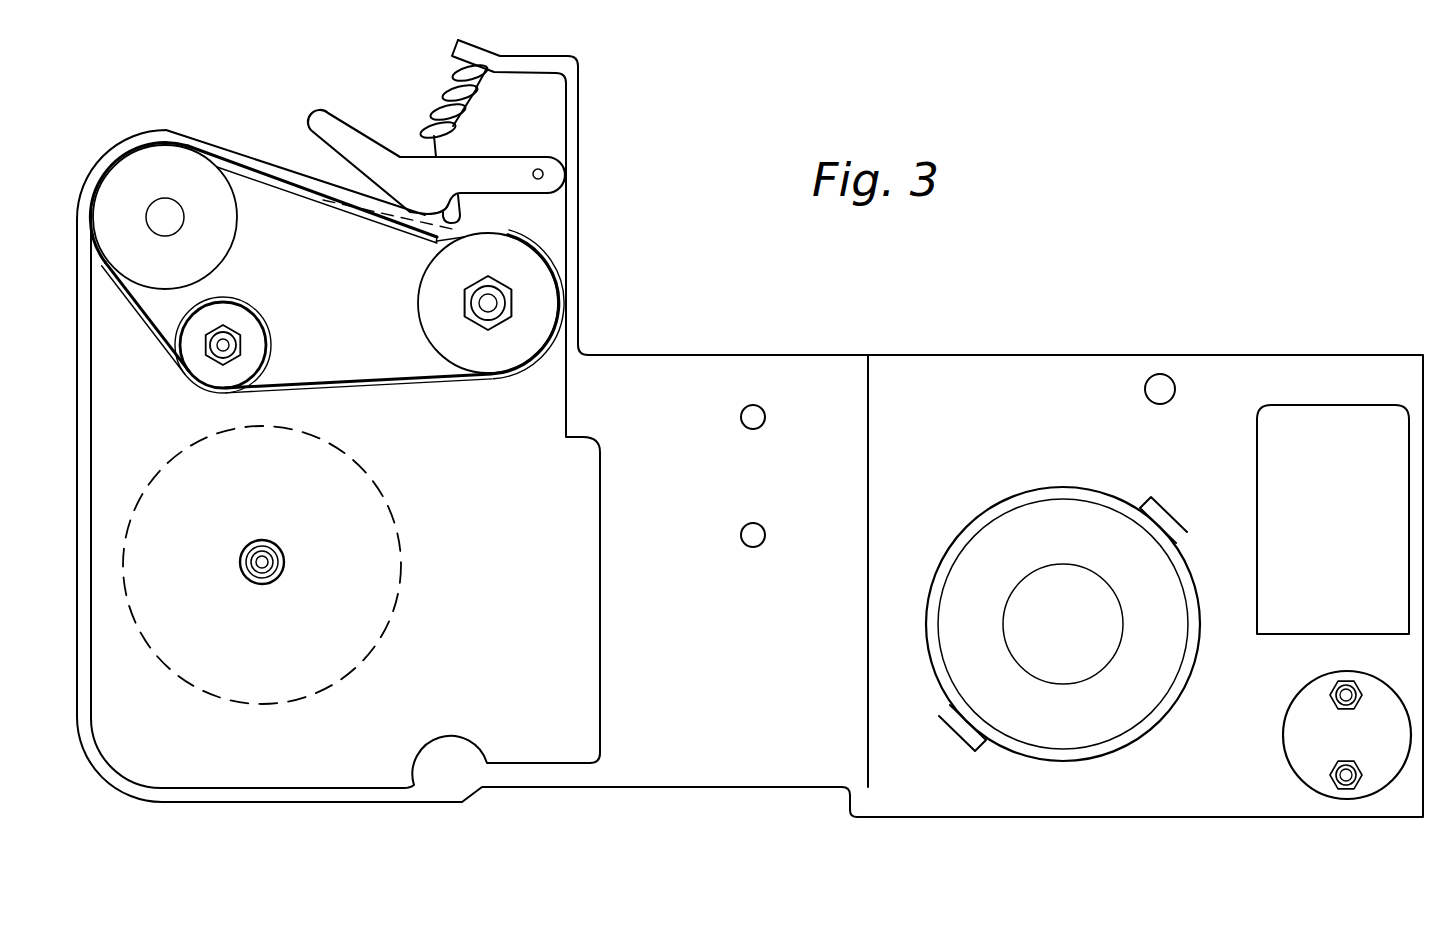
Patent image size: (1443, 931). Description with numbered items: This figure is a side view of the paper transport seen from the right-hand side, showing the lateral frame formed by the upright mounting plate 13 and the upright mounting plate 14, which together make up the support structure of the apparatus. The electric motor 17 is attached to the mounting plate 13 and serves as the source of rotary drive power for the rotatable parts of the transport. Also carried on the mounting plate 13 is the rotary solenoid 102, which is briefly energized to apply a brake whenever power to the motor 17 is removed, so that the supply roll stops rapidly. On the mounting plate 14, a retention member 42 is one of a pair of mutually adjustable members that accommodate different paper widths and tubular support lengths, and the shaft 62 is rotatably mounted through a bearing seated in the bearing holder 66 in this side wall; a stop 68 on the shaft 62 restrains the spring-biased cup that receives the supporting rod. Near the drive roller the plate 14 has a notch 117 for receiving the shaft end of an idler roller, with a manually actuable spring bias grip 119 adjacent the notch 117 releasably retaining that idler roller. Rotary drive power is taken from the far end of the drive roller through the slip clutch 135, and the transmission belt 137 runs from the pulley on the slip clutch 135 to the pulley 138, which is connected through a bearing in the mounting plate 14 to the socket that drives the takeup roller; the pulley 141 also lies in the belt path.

The mounting plate 13 is at (1000, 336).
The mounting plate 14 is at (77, 459).
The electric motor 17 is at (985, 545).
The retention member 42 is at (398, 489).
The shaft 62 is at (283, 560).
The bearing holder 66 is at (258, 585).
The stop 68 is at (262, 540).
The rotary solenoid 102 is at (1288, 735).
The notch 117 is at (457, 207).
The spring bias grip 119 is at (397, 163).
The slip clutch 135 is at (427, 293).
The transmission belt 137 is at (392, 370).
The pulley 138 is at (218, 247).
The tension pulley 141 is at (263, 325).